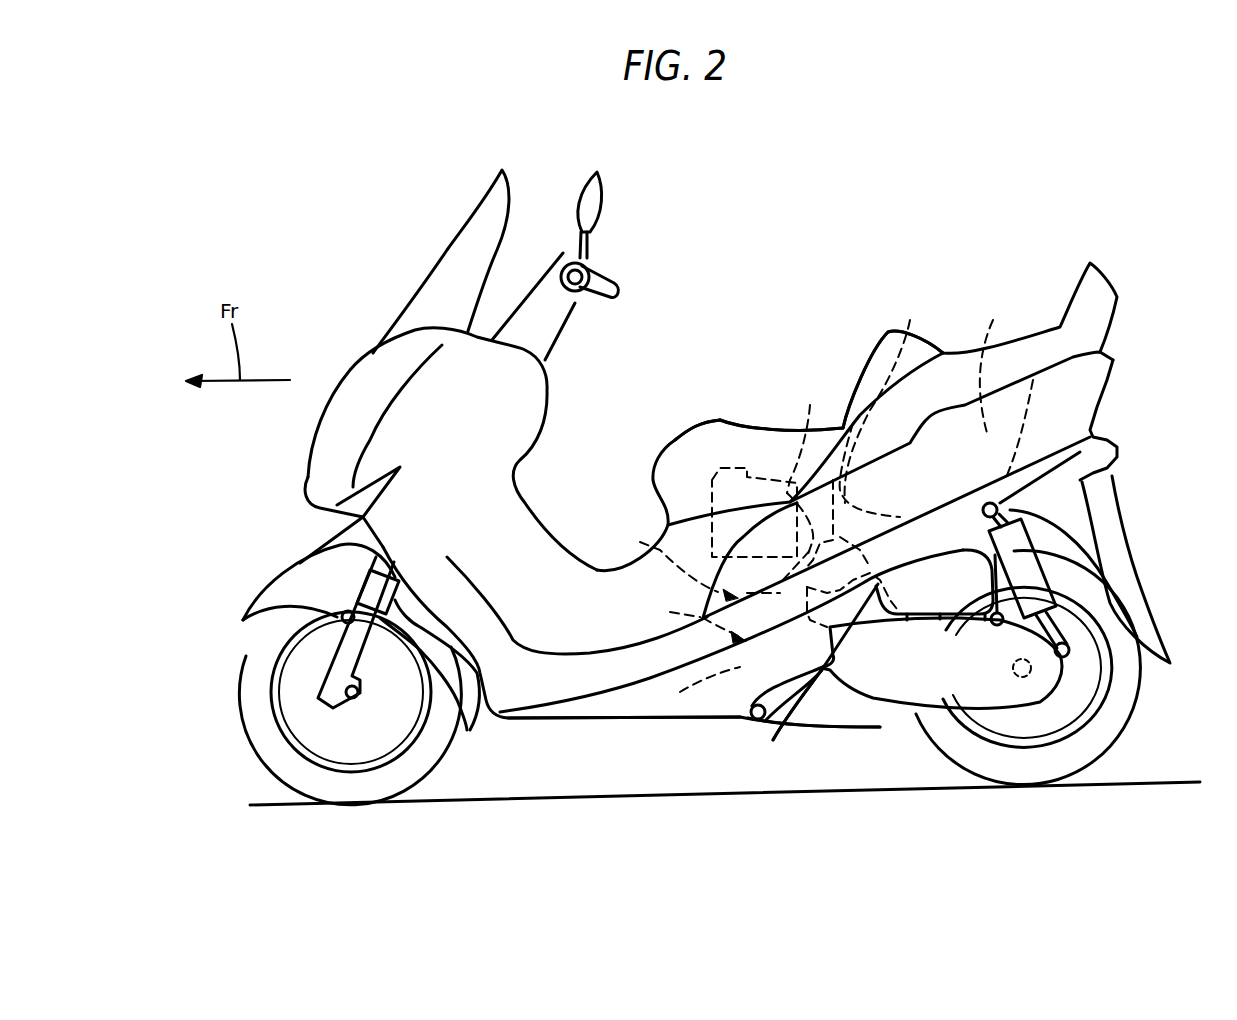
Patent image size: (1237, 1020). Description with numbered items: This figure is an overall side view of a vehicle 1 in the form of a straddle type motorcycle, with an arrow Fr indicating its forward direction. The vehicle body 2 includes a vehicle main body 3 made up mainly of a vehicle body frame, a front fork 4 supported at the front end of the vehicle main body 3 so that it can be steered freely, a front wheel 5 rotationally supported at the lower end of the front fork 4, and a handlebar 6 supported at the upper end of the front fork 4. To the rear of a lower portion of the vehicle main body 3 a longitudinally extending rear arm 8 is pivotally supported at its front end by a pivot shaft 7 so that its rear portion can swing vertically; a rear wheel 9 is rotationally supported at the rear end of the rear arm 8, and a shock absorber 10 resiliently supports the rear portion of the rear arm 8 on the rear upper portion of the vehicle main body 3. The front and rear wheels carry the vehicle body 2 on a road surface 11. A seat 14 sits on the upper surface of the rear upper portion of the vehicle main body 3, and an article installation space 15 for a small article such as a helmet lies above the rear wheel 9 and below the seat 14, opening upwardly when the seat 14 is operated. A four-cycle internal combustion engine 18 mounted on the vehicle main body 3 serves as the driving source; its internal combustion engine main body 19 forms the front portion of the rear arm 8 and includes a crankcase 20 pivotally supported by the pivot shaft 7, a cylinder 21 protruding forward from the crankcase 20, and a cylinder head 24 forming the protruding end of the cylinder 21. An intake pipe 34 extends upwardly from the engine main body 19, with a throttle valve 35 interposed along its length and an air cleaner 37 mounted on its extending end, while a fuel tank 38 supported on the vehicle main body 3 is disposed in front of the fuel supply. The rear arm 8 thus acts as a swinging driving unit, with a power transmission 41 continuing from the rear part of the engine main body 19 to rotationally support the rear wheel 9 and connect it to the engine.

The vehicle 1 is at (1053, 219).
The vehicle body 2 is at (953, 273).
The vehicle main body 3 is at (573, 722).
The front fork 4 is at (340, 667).
The front wheel 5 is at (262, 730).
The handlebar 6 is at (612, 288).
The pivot shaft 7 is at (757, 718).
The rear arm 8 is at (809, 733).
The rear wheel 9 is at (1113, 620).
The shock absorber 10 is at (1050, 527).
The road surface 11 is at (502, 800).
The seat 14 is at (752, 440).
The article installation space 15 is at (1006, 390).
The internal combustion engine 18 is at (675, 565).
The internal combustion engine main body 19 is at (691, 621).
The crankcase 20 is at (877, 677).
The cylinder 21 is at (782, 738).
The cylinder head 24 is at (680, 692).
The intake pipe 34 is at (823, 504).
The throttle valve 35 is at (893, 397).
The air cleaner 37 is at (945, 572).
The fuel tank 38 is at (709, 500).
The power transmission 41 is at (1000, 683).